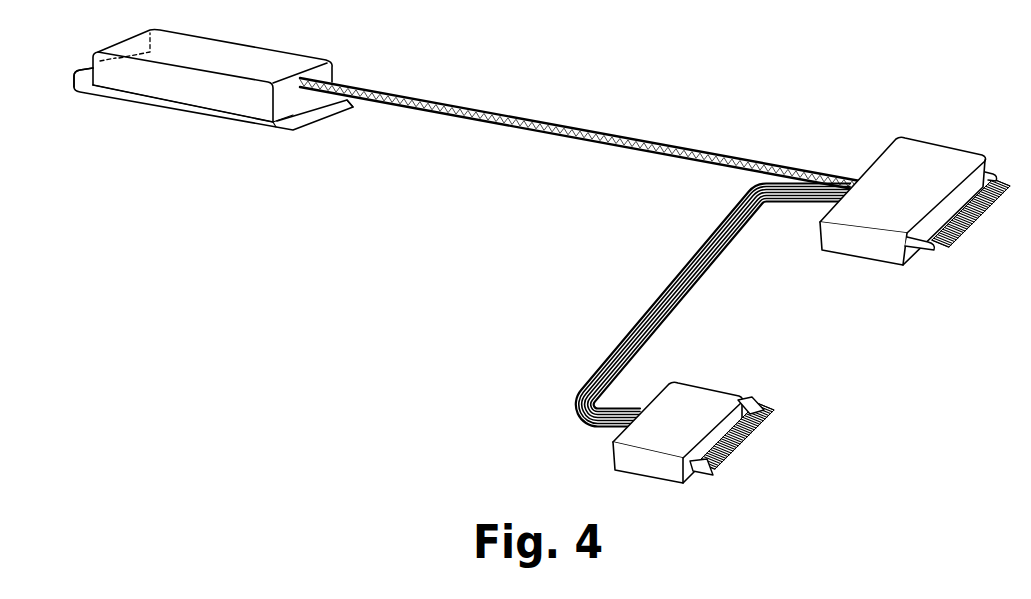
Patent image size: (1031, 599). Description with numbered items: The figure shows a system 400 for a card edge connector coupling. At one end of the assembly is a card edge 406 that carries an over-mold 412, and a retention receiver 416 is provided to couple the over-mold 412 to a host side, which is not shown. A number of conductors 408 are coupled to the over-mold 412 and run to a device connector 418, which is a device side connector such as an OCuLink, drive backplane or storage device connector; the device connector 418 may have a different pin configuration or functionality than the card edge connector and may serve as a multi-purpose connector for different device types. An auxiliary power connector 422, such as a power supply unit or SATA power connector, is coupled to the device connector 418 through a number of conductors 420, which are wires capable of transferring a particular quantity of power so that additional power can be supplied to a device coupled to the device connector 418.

The system 400 is at (818, 45).
The card edge 406 is at (285, 129).
The conductors 408 is at (583, 127).
The over-mold 412 is at (162, 103).
The retention receiver 416 is at (95, 54).
The device connector 418 is at (943, 136).
The conductors 420 is at (704, 277).
The auxiliary power connector 422 is at (713, 382).